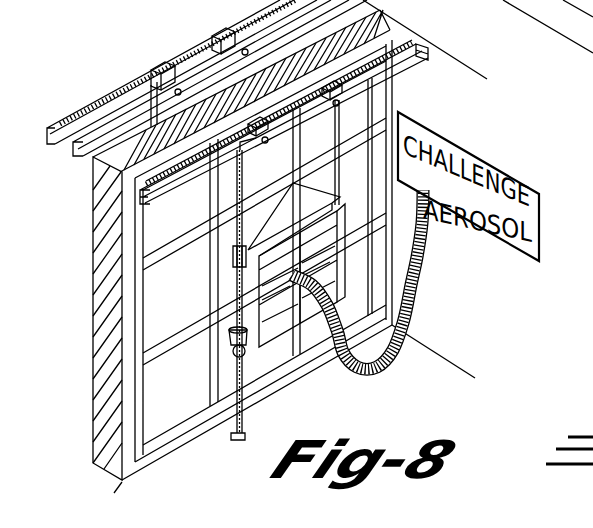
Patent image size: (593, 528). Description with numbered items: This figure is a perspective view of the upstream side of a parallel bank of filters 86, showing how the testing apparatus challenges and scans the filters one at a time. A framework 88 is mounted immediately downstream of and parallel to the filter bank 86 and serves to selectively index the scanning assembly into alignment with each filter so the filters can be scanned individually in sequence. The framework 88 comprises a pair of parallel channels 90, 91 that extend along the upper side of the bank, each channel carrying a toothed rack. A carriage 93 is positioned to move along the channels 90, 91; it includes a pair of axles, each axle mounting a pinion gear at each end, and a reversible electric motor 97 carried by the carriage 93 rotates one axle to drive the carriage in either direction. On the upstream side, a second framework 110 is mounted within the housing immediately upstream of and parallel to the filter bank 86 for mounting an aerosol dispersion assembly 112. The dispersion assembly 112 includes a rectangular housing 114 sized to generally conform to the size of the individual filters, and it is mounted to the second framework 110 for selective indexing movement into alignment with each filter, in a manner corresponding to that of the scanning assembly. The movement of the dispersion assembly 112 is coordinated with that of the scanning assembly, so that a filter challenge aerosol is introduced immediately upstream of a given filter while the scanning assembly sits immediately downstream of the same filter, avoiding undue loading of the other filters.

The parallel bank of filters 86 is at (150, 297).
The framework 88 is at (192, 95).
The channel 90 is at (60, 120).
The channel 91 is at (80, 158).
The carriage 93 is at (216, 38).
The reversible electric motor 97 is at (175, 66).
The second framework 110 is at (422, 42).
The aerosol dispersion assembly 112 is at (222, 296).
The rectangular housing 114 is at (232, 258).